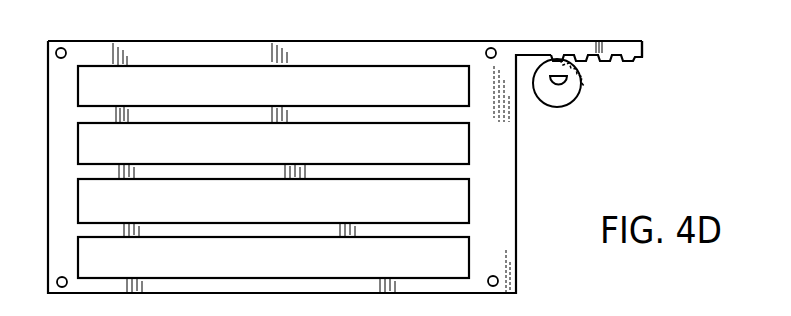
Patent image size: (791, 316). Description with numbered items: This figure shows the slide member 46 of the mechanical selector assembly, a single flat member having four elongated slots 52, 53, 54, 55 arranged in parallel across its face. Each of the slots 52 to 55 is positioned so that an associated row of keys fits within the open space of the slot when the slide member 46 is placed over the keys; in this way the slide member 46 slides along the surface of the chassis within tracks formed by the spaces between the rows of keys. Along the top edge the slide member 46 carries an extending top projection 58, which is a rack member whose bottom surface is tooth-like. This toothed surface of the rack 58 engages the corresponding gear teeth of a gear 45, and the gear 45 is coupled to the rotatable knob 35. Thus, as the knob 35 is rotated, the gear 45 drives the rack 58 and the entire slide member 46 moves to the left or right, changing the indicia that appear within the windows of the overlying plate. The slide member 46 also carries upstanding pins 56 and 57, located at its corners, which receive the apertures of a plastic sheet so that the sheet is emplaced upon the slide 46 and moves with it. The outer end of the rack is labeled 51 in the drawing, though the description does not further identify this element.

The rotatable knob 35 is at (565, 100).
The gear 45 is at (580, 73).
The slide member 46 is at (497, 217).
The rack end 51 is at (640, 45).
The elongated slot 52 is at (370, 80).
The elongated slot 53 is at (448, 137).
The elongated slot 54 is at (447, 195).
The elongated slot 55 is at (450, 255).
The upstanding pin 56 is at (62, 47).
The upstanding pin 57 is at (490, 47).
The extending top projection 58 is at (556, 43).